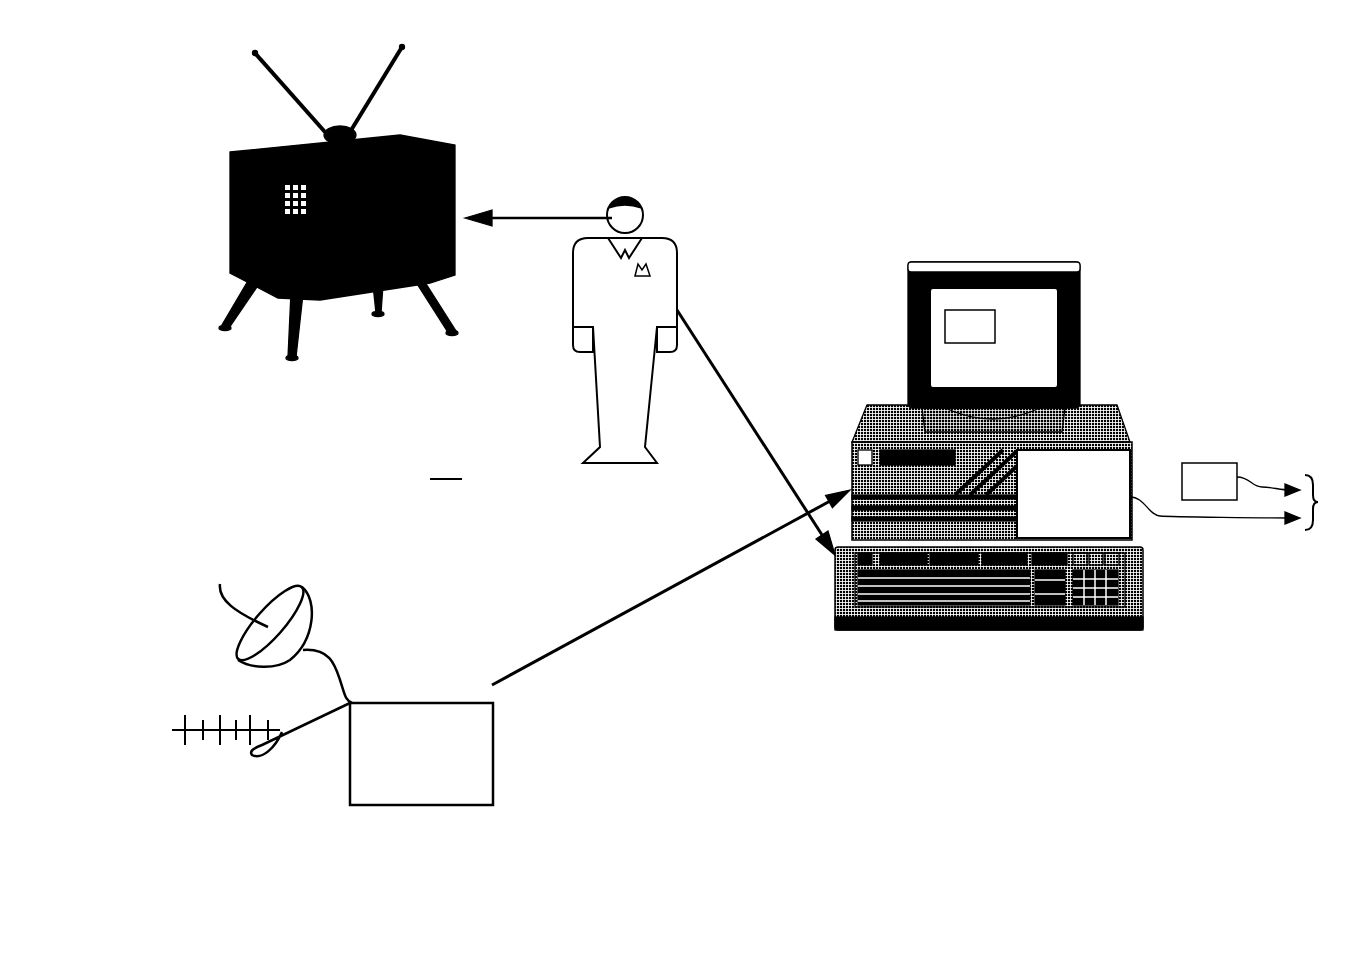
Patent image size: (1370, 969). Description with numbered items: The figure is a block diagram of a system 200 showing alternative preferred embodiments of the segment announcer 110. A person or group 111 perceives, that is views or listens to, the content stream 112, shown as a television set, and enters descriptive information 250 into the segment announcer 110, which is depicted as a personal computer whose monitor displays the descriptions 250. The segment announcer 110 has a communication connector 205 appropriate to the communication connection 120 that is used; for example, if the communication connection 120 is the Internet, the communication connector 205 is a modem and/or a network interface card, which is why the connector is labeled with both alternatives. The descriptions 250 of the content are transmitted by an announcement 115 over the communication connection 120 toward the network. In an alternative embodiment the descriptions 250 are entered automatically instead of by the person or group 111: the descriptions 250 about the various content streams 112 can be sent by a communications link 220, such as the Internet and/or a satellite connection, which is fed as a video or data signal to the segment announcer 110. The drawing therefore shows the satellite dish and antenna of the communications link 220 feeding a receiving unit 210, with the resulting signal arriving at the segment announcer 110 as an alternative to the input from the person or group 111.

The system 200 is at (1275, 102).
The content stream 112 is at (455, 192).
The person/group 111 is at (683, 280).
The segment announcer 110 is at (1031, 399).
The descriptions 250 is at (970, 326).
The communication connector 205 is at (1130, 528).
The announcement 115 is at (1241, 481).
The communication connection 120 is at (1245, 508).
The signal receiver box 210 is at (493, 740).
The communications link 220 is at (220, 715).